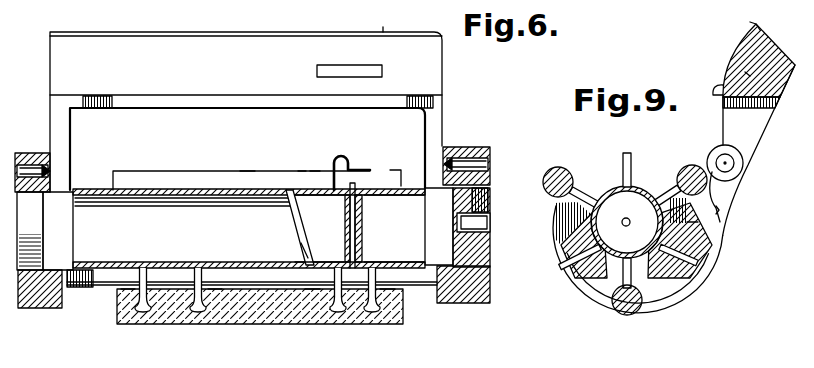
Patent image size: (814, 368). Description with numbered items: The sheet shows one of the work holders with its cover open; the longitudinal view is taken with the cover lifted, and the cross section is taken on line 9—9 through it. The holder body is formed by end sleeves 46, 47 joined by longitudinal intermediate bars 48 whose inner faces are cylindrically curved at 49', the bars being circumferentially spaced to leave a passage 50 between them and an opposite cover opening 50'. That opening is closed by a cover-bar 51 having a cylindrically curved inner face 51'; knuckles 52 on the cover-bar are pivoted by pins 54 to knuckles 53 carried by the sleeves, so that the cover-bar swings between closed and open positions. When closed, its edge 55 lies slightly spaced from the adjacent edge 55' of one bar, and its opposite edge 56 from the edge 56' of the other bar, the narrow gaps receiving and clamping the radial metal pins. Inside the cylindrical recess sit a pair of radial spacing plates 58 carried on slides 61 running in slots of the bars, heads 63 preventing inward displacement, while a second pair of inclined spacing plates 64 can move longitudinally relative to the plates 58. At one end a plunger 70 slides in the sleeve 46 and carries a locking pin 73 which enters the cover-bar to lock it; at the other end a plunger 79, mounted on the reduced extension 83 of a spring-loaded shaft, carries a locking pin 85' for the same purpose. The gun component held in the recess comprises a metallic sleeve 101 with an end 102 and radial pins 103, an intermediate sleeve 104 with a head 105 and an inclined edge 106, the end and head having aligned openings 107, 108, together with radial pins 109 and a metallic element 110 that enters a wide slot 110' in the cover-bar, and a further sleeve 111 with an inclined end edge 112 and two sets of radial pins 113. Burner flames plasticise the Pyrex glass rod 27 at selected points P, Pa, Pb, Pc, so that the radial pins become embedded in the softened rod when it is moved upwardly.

In FIG. 6, the section line 9— 9 is at (383, 27).
In FIG. 6, the Pyrex glass rod 27 is at (190, 171).
In FIG. 9, the Pyrex glass rod 27 is at (571, 172).
In FIG. 6, the sleeve 46 is at (30, 310).
In FIG. 6, the sleeve 47 is at (476, 302).
In FIG. 6, the longitudinal intermediate bars 48 is at (82, 290).
In FIG. 9, the longitudinal intermediate bars 48 is at (583, 283).
In FIG. 9, the cylindrically curved inner face 49' is at (718, 218).
In FIG. 9, the opening or passage 50 is at (612, 304).
In FIG. 9, the cover opening 50' is at (593, 184).
In FIG. 6, the cover-bar 51 is at (264, 112).
In FIG. 9, the cover-bar 51 is at (758, 60).
In FIG. 9, the cylindrically curved inner face 51' is at (731, 70).
In FIG. 6, the knuckles 52 is at (445, 127).
In FIG. 9, the knuckles 52 is at (768, 113).
In FIG. 9, the knuckles 53 is at (750, 192).
In FIG. 9, the pins 54 is at (735, 165).
In FIG. 9, the edge of cover-bar 55 is at (702, 80).
In FIG. 9, the edge of bar 55' is at (733, 210).
In FIG. 9, the opposite edge of cover-bar 56 is at (743, 16).
In FIG. 9, the edge of other bar 56' is at (557, 223).
In FIG. 6, the spacing plates 58 is at (355, 183).
In FIG. 9, the radial slides or carriages 61 is at (558, 240).
In FIG. 9, the heads 63 is at (697, 264).
In FIG. 6, the second pair of spacing plates 64 is at (297, 222).
In FIG. 6, the plunger 70 is at (33, 220).
In FIG. 6, the locking pin 73 is at (17, 153).
In FIG. 6, the plunger 79 is at (492, 258).
In FIG. 6, the reduced extension 83 is at (481, 227).
In FIG. 6, the locking pin 85' is at (490, 160).
In FIG. 6, the metallic sleeve 101 is at (412, 268).
In FIG. 9, the metallic sleeve 101 is at (650, 187).
In FIG. 6, the end 102 is at (388, 183).
In FIG. 6, the radial pins 103 is at (372, 291).
In FIG. 9, the radial pins 103 is at (657, 205).
In FIG. 6, the intermediate metallic sleeve 104 is at (315, 189).
In FIG. 6, the head 105 is at (346, 249).
In FIG. 6, the inclined or diagonal edge 106 is at (303, 189).
In FIG. 6, the opening 107 is at (367, 222).
In FIG. 9, the opening 107 is at (625, 227).
In FIG. 6, the opening 108 is at (343, 230).
In FIG. 6, the radial metallic pins 109 is at (312, 291).
In FIG. 6, the metallic element 110 is at (348, 156).
In FIG. 9, the metallic element 110 is at (639, 157).
In FIG. 6, the wide slot 110' is at (347, 40).
In FIG. 6, the metallic sleeve 111 is at (247, 189).
In FIG. 6, the inclined or diagonal end edge 112 is at (300, 242).
In FIG. 6, the radial pins 113 is at (196, 270).
In FIG. 6, the selected point P is at (382, 299).
In FIG. 6, the selected point Pa is at (332, 297).
In FIG. 6, the selected point Pb is at (213, 327).
In FIG. 6, the selected point Pc is at (128, 327).